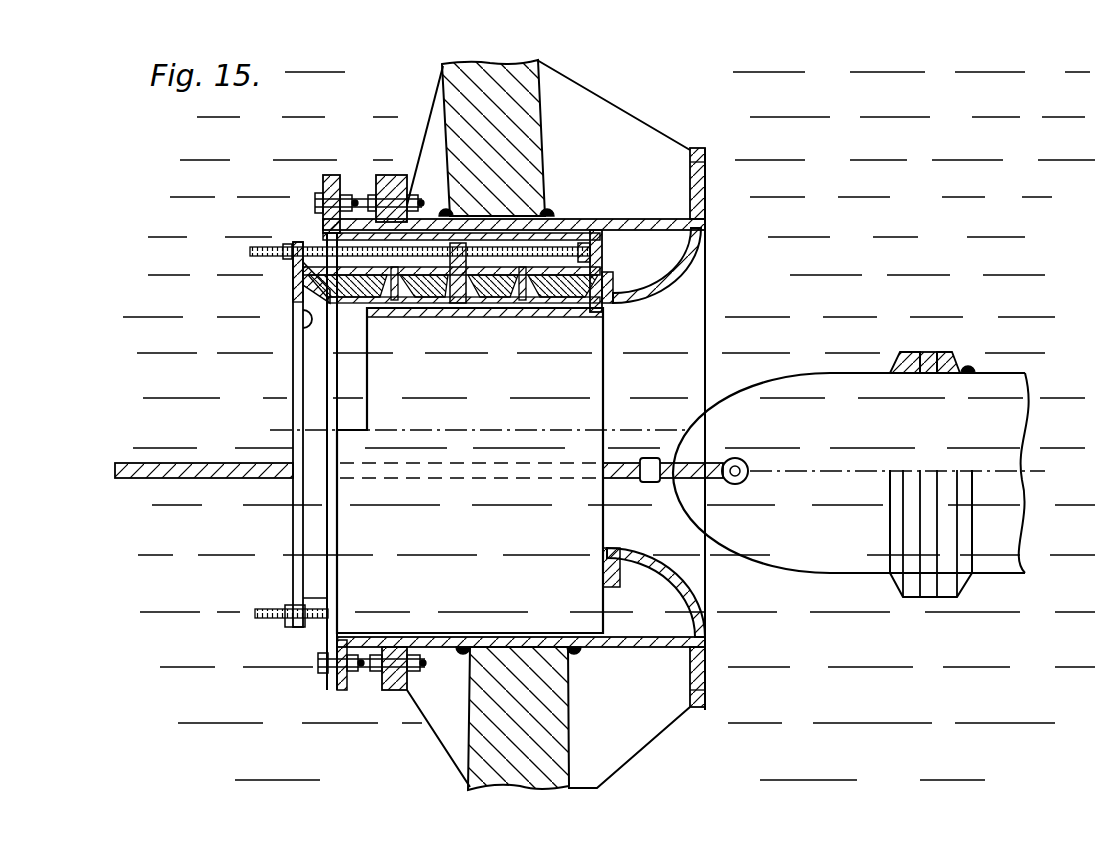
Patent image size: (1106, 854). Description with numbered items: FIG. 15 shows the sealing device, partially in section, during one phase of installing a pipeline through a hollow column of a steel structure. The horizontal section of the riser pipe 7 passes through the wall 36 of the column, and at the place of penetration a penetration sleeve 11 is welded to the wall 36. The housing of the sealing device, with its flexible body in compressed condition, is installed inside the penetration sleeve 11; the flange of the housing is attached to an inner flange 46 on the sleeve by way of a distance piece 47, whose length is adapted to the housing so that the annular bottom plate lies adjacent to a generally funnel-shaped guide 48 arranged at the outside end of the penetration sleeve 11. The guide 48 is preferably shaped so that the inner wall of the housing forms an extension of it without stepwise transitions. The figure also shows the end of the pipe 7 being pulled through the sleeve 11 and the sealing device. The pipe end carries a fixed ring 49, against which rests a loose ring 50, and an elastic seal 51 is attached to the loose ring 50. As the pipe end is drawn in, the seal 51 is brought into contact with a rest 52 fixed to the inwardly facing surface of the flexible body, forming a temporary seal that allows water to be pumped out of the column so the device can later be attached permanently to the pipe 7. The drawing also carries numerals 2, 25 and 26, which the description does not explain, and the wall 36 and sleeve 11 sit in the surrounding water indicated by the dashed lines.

The hull plating 2 is at (955, 151).
The riser pipe 7 is at (812, 387).
The penetration sleeve 11 is at (588, 217).
The end plate 25 is at (604, 251).
The tie rod 26 is at (283, 254).
The wall 36 is at (510, 93).
The inner flange 46 is at (392, 177).
The distance piece 47 is at (358, 228).
The funnel-shaped guide 48 is at (670, 272).
The fixed ring 49 is at (958, 361).
The loose ring 50 is at (937, 347).
The elastic seal 51 is at (903, 352).
The rest 52 is at (298, 327).